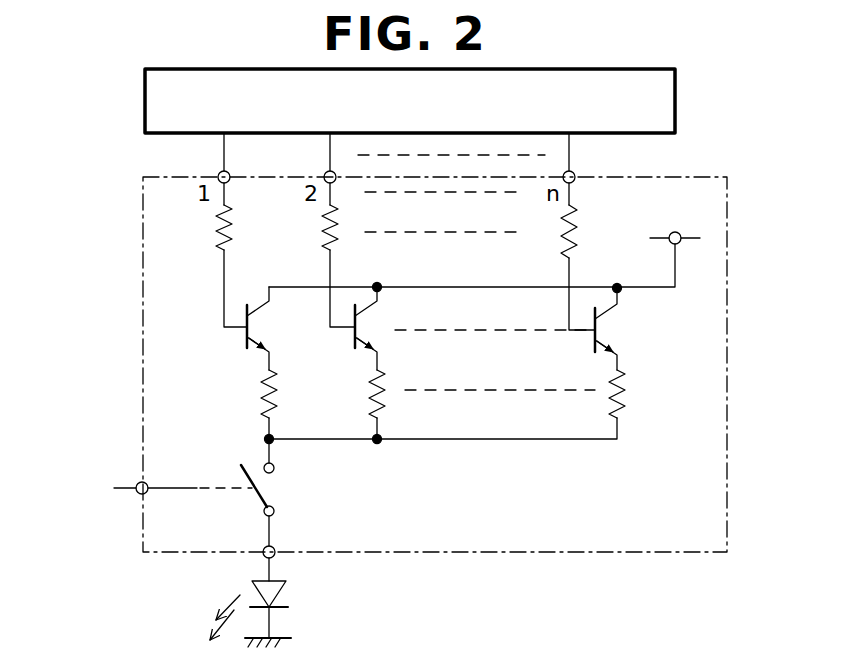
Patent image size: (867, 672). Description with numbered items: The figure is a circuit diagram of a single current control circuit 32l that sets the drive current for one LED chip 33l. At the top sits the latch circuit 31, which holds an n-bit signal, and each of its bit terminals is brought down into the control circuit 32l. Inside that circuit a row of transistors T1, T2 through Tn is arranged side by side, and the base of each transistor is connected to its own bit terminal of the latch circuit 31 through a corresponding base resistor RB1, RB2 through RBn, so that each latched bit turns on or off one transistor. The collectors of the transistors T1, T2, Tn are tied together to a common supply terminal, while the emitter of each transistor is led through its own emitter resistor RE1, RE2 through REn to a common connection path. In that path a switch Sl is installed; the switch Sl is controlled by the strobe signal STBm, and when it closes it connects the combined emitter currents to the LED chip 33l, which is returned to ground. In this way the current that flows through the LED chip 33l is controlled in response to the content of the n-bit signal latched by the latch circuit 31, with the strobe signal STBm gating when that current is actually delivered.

The latch circuit 31 is at (677, 106).
The control circuit 32l is at (728, 306).
The LED chip 33l is at (287, 593).
The switch Sl is at (275, 494).
The strobe signal STBm is at (145, 489).
The resistor RB1 is at (198, 228).
The resistor RB2 is at (306, 228).
The resistor RBn is at (594, 231).
The resistor RE1 is at (246, 394).
The resistor RE2 is at (354, 394).
The resistor REn is at (642, 394).
The transistor T1 is at (258, 334).
The transistor T2 is at (365, 334).
The transistor Tn is at (605, 336).